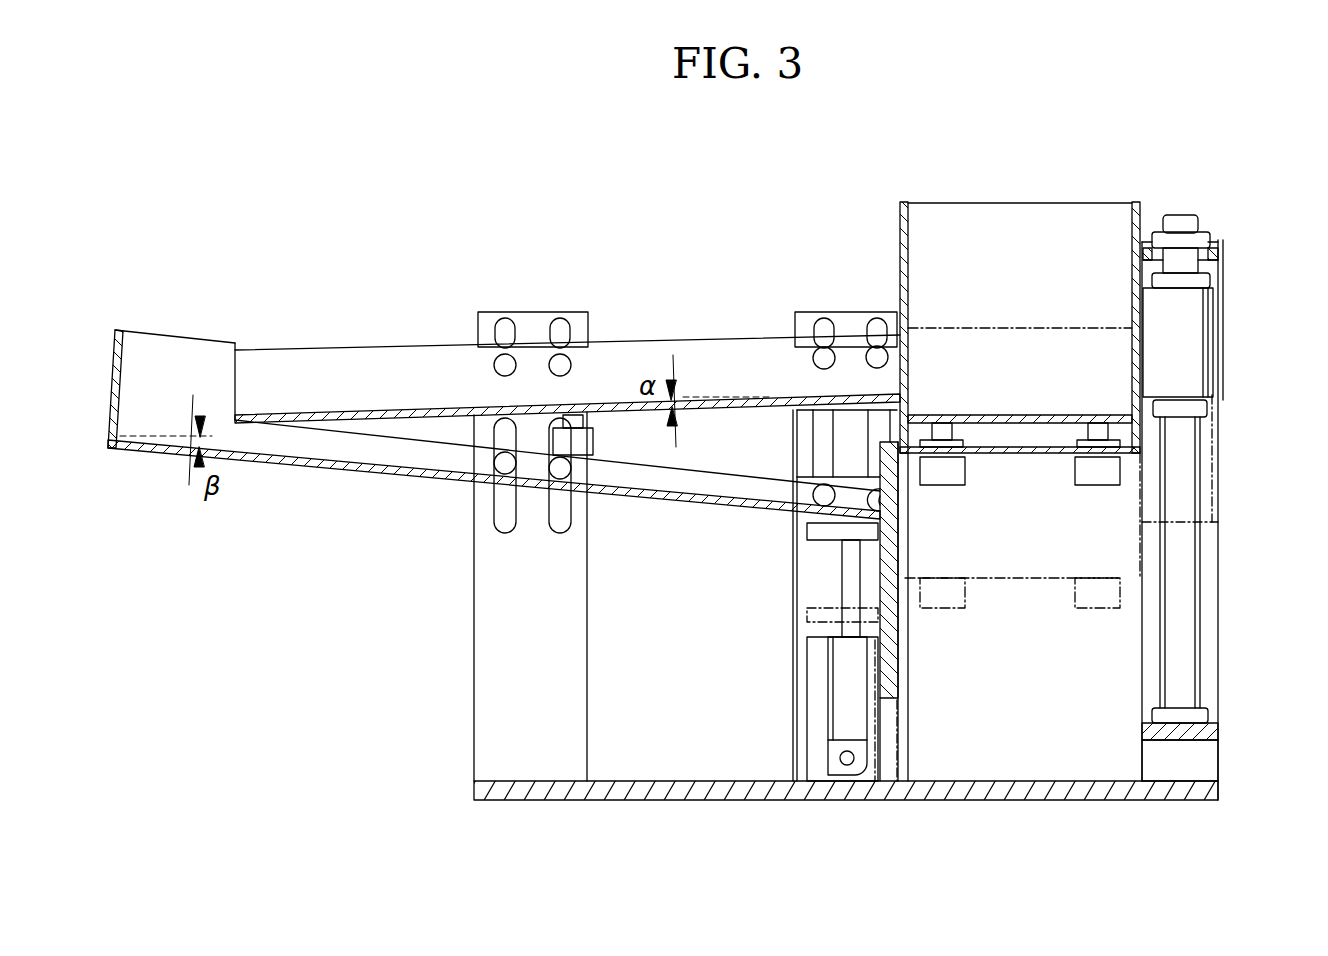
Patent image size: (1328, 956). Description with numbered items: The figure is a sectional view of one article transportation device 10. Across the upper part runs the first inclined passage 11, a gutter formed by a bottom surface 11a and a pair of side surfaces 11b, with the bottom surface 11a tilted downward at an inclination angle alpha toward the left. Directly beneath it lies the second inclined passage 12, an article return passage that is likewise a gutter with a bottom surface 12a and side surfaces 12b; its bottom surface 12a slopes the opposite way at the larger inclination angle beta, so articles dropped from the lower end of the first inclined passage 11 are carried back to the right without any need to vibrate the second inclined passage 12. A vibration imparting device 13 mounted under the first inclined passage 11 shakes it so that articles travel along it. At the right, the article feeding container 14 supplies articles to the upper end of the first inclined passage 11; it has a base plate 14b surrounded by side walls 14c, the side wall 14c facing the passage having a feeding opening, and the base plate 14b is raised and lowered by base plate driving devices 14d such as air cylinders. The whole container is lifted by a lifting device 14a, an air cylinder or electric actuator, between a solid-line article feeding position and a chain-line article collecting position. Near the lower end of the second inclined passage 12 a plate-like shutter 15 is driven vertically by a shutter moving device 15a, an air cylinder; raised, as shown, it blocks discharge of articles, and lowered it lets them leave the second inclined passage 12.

The article transportation device 10 is at (1234, 229).
The first inclined passage 11 is at (504, 343).
The bottom surface 11a is at (611, 404).
The side surfaces 11b is at (726, 358).
The second inclined passage 12 is at (494, 498).
The bottom surface 12a is at (678, 506).
The side surfaces 12b is at (722, 487).
The vibration imparting device 13 is at (594, 442).
The article feeding container 14 is at (1062, 394).
The lifting device 14a is at (1185, 352).
The base plate 14b is at (1030, 415).
The side walls 14c is at (1050, 227).
The base plate driving devices 14d is at (945, 480).
The shutter 15 is at (857, 611).
The shutter moving device 15a is at (847, 702).